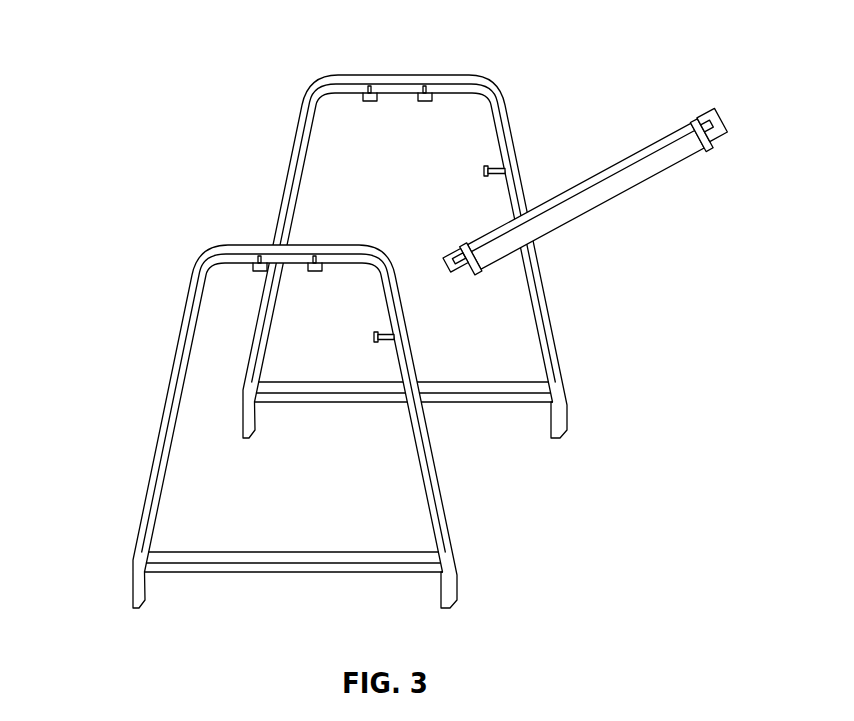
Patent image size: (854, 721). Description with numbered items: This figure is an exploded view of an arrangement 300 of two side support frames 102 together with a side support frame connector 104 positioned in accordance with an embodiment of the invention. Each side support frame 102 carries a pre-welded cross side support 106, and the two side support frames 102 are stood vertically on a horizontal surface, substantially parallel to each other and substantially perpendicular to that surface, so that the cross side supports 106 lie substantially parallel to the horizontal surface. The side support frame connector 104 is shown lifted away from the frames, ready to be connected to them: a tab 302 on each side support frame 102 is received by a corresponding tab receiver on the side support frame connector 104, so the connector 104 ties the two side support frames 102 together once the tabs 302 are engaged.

The stand assembly 300 is at (411, 317).
The side support frame 102 is at (163, 407).
The side support frame connector 104 is at (604, 225).
The cross side support 106 is at (301, 575).
The tab 302 is at (372, 337).